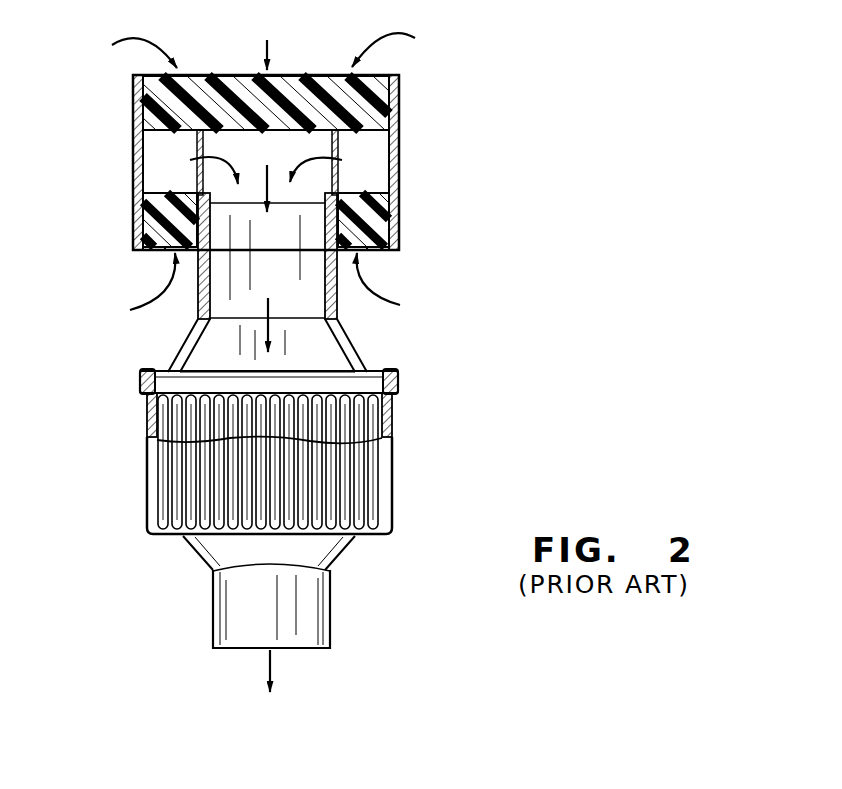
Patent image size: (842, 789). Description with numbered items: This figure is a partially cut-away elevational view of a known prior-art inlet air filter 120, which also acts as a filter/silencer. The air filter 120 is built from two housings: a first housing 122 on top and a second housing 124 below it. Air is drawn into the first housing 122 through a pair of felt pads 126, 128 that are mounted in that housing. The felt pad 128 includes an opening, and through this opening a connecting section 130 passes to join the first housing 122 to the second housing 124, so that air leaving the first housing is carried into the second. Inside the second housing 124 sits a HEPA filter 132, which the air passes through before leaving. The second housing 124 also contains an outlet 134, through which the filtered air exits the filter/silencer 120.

The air filter 120 is at (436, 157).
The first housing 122 is at (133, 172).
The second housing 124 is at (148, 478).
The felt pad 126 is at (284, 88).
The felt pad 128 is at (380, 238).
The connecting section 130 is at (203, 292).
The HEPA filter 132 is at (335, 458).
The outlet 134 is at (297, 648).